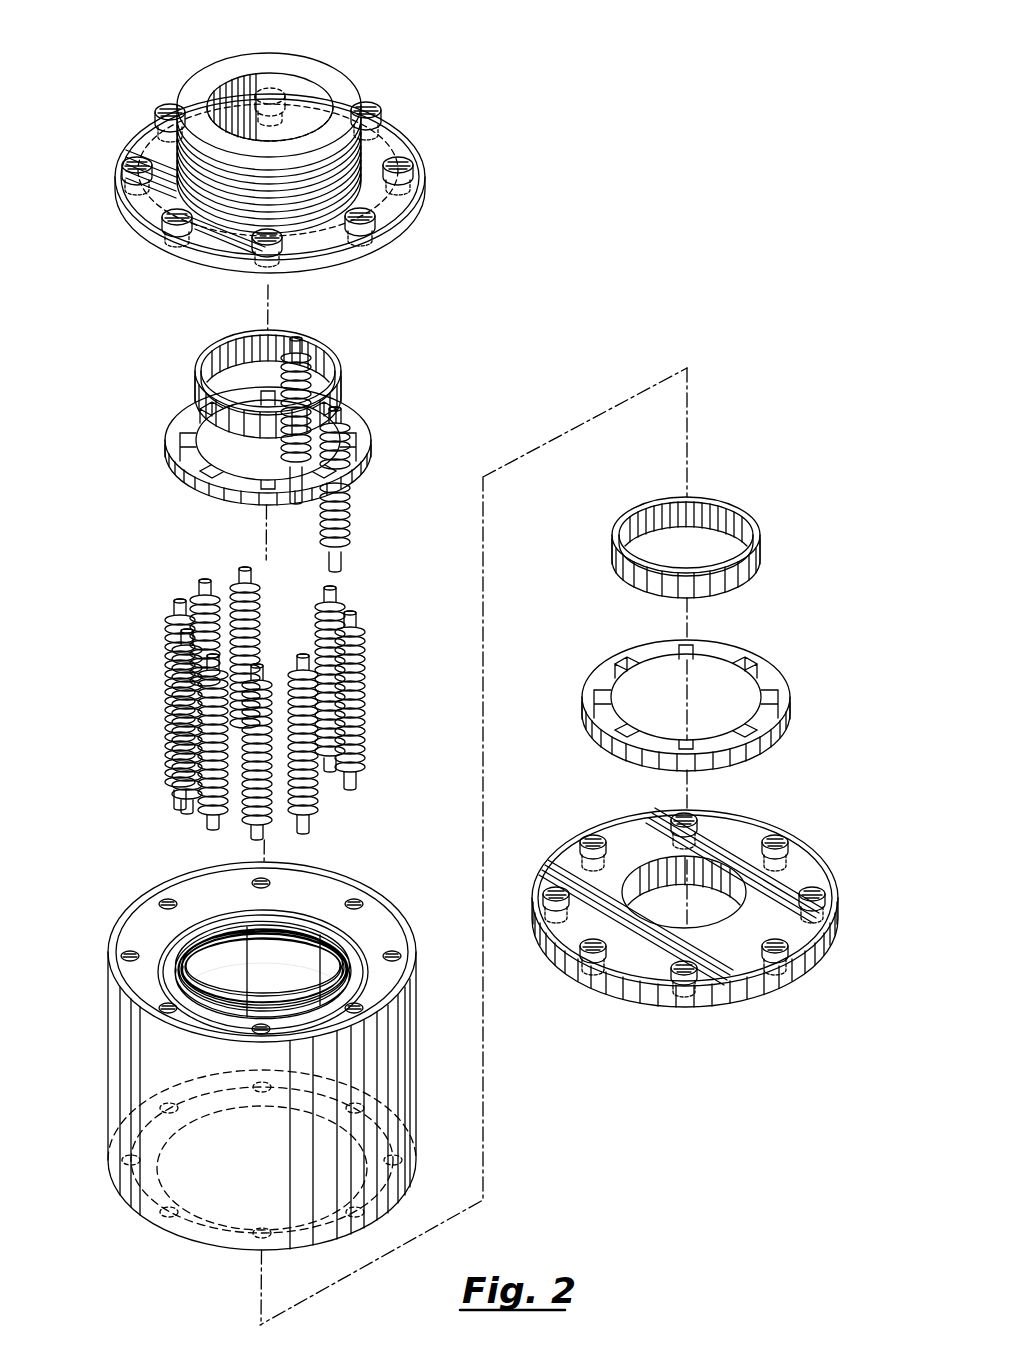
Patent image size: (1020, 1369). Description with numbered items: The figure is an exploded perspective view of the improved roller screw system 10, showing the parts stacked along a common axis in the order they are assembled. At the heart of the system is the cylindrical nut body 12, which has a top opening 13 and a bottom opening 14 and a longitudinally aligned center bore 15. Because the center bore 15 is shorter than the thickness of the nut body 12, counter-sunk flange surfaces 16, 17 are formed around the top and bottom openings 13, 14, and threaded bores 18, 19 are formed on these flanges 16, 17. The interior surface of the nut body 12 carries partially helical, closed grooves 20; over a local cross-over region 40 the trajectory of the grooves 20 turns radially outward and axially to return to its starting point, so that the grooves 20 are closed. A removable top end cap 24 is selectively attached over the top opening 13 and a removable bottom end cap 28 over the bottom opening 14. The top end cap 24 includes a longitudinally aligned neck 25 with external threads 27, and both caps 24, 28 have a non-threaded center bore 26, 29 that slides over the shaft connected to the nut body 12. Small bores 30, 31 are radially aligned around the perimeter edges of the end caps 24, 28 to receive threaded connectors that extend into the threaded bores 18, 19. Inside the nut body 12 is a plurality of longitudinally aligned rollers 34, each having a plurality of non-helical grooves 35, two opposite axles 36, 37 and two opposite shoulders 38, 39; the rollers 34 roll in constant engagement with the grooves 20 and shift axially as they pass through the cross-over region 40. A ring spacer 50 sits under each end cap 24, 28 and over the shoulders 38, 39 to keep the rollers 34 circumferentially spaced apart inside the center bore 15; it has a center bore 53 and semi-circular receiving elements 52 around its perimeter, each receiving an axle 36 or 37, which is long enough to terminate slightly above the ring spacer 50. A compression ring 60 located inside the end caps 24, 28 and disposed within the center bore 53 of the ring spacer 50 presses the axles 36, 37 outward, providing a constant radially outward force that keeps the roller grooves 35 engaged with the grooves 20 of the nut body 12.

The roller screw system 10 is at (164, 68).
The nut body 12 is at (112, 998).
The top opening 13 is at (152, 928).
The bottom opening 14 is at (247, 1170).
The center bore 15 is at (290, 952).
The counter-sunk flange surface 16 is at (135, 935).
The counter-sunk flange surface 17 is at (120, 1198).
The threaded bores 18 is at (166, 902).
The threaded bores 19 is at (132, 1158).
The grooves 20 is at (236, 982).
The top end cap 24 is at (242, 54).
The neck 25 is at (362, 85).
The center bore 26 is at (292, 92).
The external threads 27 is at (352, 128).
The bottom end cap 28 is at (552, 840).
The center bore 29 is at (722, 902).
The small bores 30 is at (141, 170).
The small bores 31 is at (682, 818).
The rollers 34 is at (300, 362).
The non-helical grooves 35 is at (180, 717).
The axle 36 is at (180, 608).
The axle 37 is at (185, 806).
The shoulder 38 is at (362, 612).
The shoulder 39 is at (360, 775).
The cross-over region 40 is at (320, 940).
The ring spacer 50 is at (168, 440).
The semi-circular receiving elements 52 is at (350, 458).
The center bore 53 is at (227, 434).
The compression ring 60 is at (332, 388).